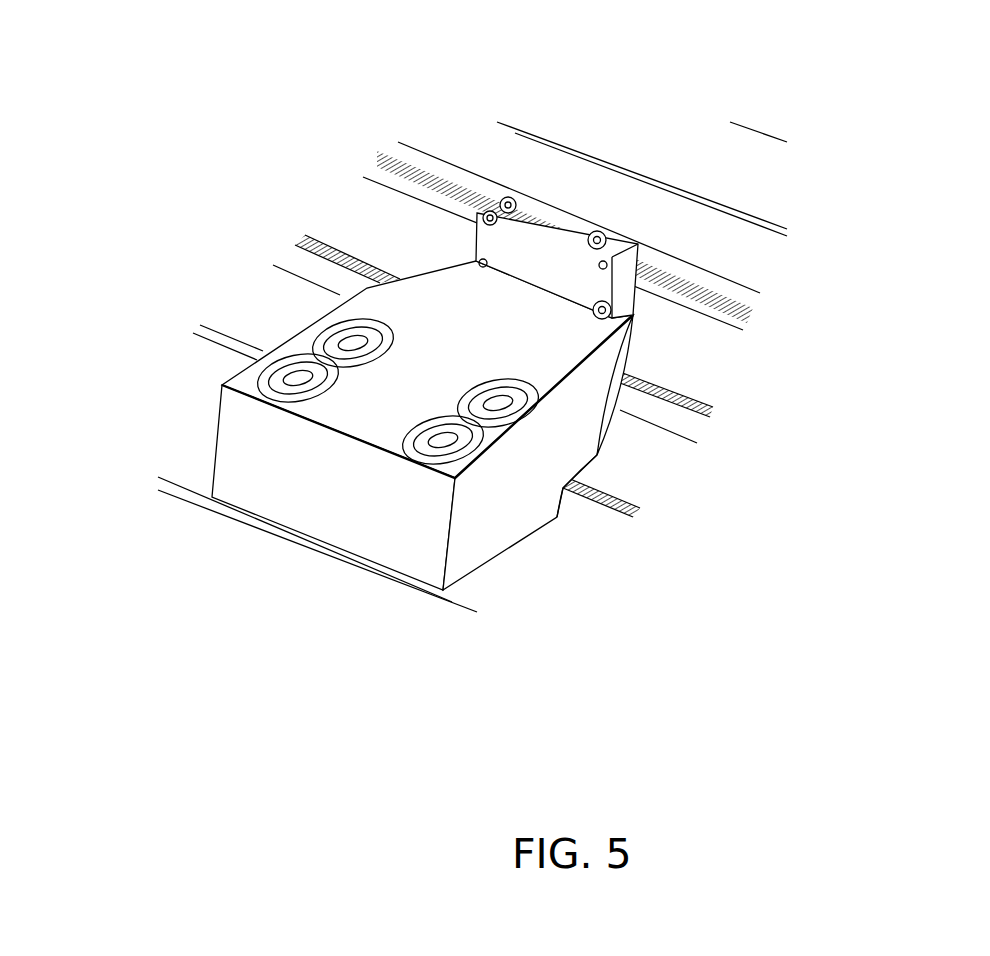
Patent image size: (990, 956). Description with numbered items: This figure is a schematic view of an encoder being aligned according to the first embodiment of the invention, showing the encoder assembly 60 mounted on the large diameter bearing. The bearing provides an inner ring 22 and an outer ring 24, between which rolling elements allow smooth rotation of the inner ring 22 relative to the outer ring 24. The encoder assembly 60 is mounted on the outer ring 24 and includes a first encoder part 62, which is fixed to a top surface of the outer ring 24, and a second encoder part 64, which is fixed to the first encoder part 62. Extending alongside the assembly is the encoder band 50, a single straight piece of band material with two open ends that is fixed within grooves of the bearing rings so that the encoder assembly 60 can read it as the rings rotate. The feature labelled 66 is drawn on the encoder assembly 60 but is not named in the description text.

The encoder assembly 60 is at (571, 386).
The second encoder part 64 is at (562, 215).
The inner ring 22 is at (698, 230).
The encoder band 50 is at (737, 300).
The wedge fin 66 is at (547, 353).
The outer ring 24 is at (620, 463).
The first encoder part 62 is at (527, 478).